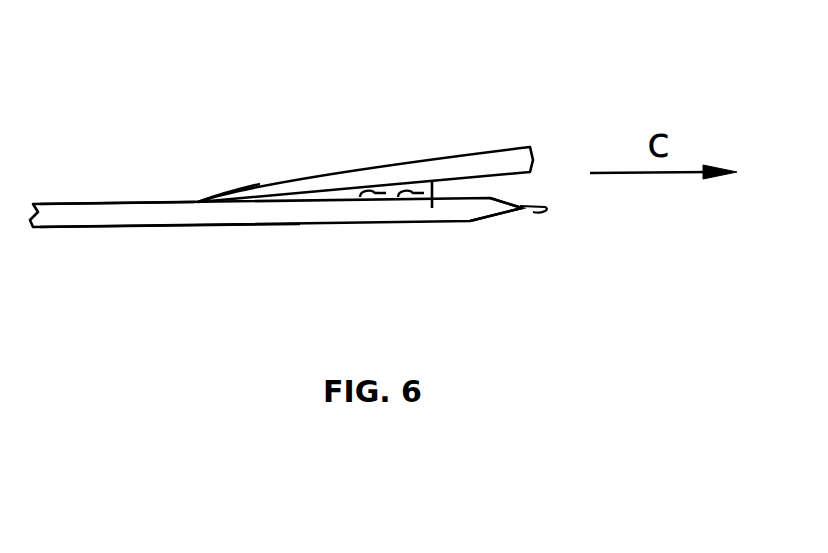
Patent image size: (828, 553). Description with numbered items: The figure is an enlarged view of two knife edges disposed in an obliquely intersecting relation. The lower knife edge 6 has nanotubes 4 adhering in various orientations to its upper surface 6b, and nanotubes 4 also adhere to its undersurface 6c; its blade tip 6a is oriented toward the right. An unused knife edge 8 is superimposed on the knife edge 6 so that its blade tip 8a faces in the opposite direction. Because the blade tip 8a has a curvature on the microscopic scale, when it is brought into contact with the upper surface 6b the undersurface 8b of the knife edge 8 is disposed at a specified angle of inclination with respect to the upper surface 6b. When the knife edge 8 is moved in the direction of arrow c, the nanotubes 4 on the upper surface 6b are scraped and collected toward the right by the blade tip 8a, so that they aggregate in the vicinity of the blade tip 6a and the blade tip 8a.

The nanotubes 4 is at (407, 197).
The knife edge 6 is at (157, 216).
The blade tip 6a is at (533, 212).
The upper surface 6b is at (127, 203).
The undersurface 6c is at (222, 227).
The knife edge 8 is at (452, 170).
The blade tip 8a is at (240, 192).
The undersurface 8b is at (432, 208).